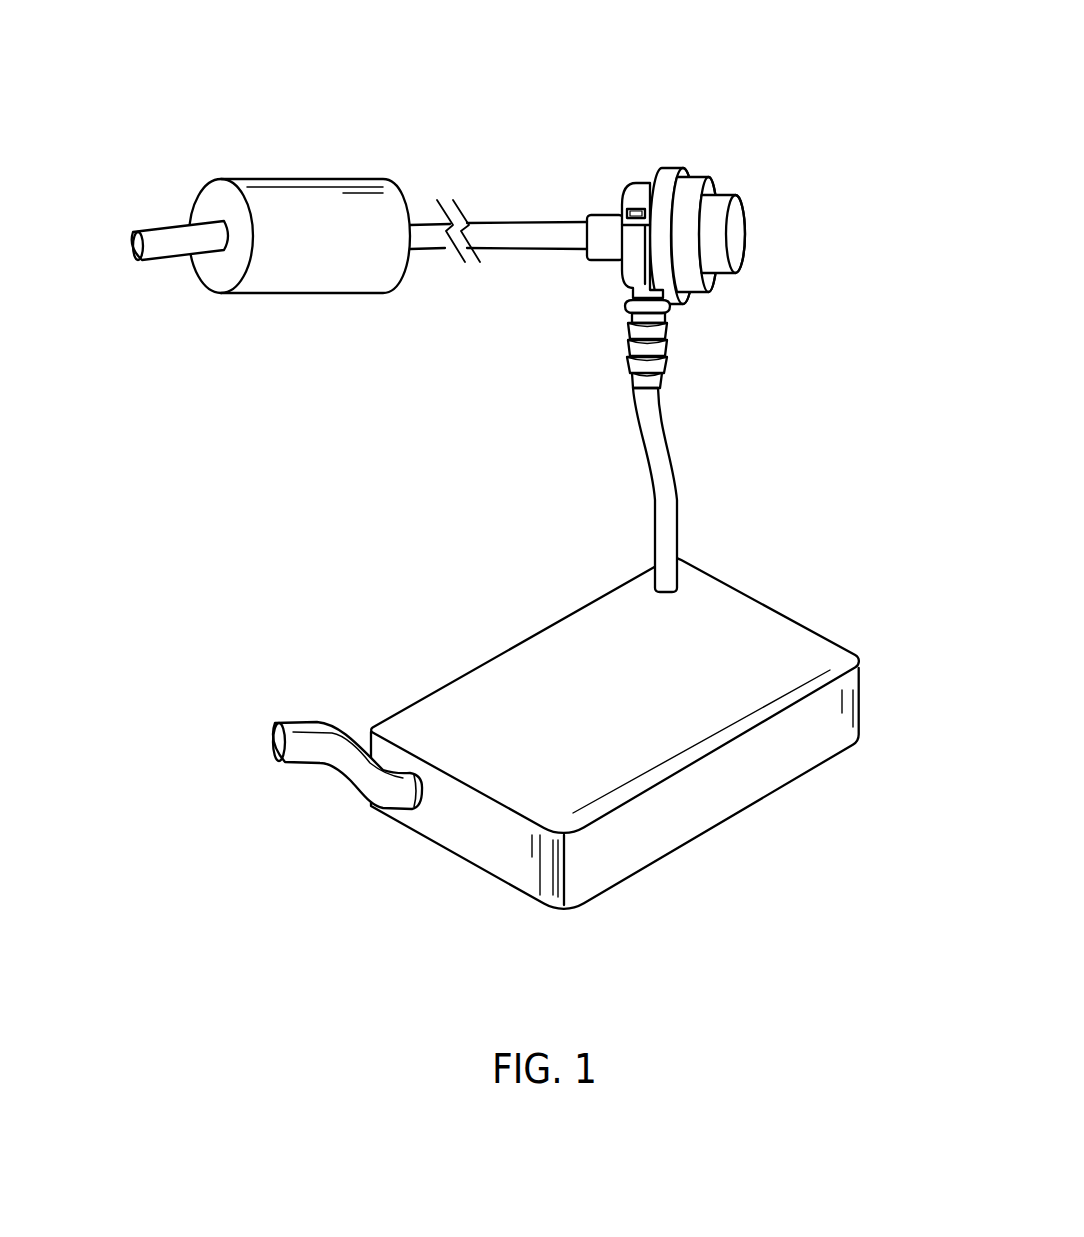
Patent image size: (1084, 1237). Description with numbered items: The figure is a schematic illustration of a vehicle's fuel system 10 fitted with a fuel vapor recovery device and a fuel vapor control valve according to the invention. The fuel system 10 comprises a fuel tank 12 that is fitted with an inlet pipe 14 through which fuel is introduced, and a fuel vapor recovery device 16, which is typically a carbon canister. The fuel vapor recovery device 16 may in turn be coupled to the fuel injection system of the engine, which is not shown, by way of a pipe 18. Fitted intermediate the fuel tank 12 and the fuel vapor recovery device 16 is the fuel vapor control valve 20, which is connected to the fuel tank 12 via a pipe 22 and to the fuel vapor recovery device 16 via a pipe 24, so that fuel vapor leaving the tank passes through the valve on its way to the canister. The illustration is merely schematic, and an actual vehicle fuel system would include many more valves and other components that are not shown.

The fuel system 10 is at (514, 427).
The fuel tank 12 is at (757, 655).
The inlet pipe 14 is at (298, 742).
The fuel vapor recovery device 16 is at (305, 223).
The pipe 18 is at (172, 240).
The fuel vapor control valve 20 is at (745, 108).
The pipe 22 is at (657, 498).
The pipe 24 is at (512, 235).